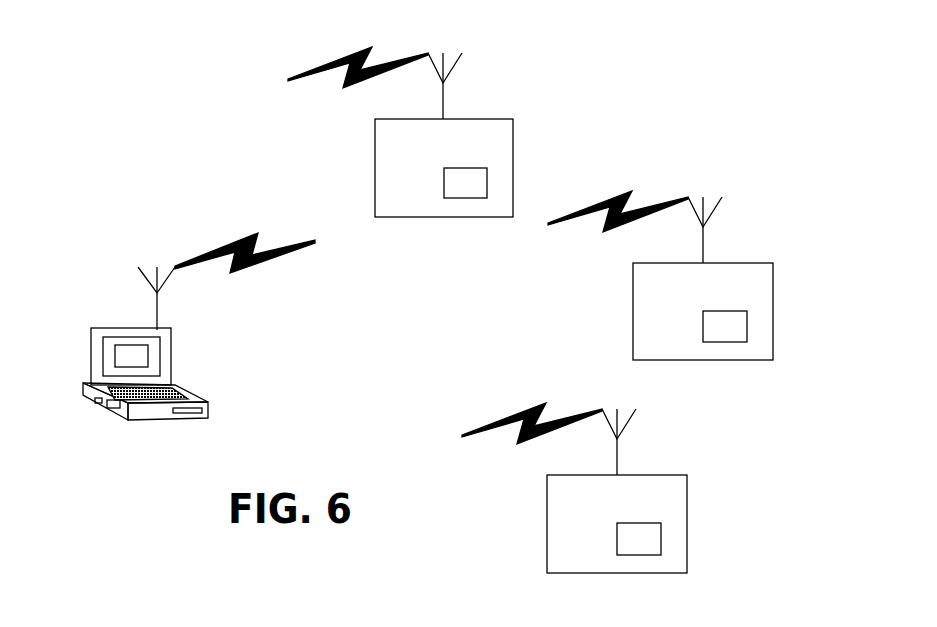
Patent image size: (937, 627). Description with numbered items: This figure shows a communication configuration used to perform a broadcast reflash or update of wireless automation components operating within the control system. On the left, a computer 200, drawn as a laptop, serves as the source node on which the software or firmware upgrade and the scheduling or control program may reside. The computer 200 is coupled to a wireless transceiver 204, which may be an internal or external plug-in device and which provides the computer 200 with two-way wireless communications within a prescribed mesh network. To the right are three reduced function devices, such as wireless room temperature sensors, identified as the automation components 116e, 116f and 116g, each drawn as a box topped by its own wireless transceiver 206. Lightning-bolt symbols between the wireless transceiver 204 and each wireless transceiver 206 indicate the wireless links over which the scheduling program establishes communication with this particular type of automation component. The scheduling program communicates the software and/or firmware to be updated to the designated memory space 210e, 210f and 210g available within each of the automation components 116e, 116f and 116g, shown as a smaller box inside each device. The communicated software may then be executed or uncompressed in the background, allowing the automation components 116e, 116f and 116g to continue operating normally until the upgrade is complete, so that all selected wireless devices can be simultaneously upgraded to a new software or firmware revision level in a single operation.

The computer 200 is at (78, 372).
The wireless transceiver 204 is at (170, 315).
The wireless transceiver 206 is at (460, 83).
The automation component 116e is at (525, 133).
The automation component 116f is at (785, 293).
The automation component 116g is at (700, 523).
The designated memory space 210e is at (499, 183).
The designated memory space 210f is at (759, 335).
The designated memory space 210g is at (670, 562).